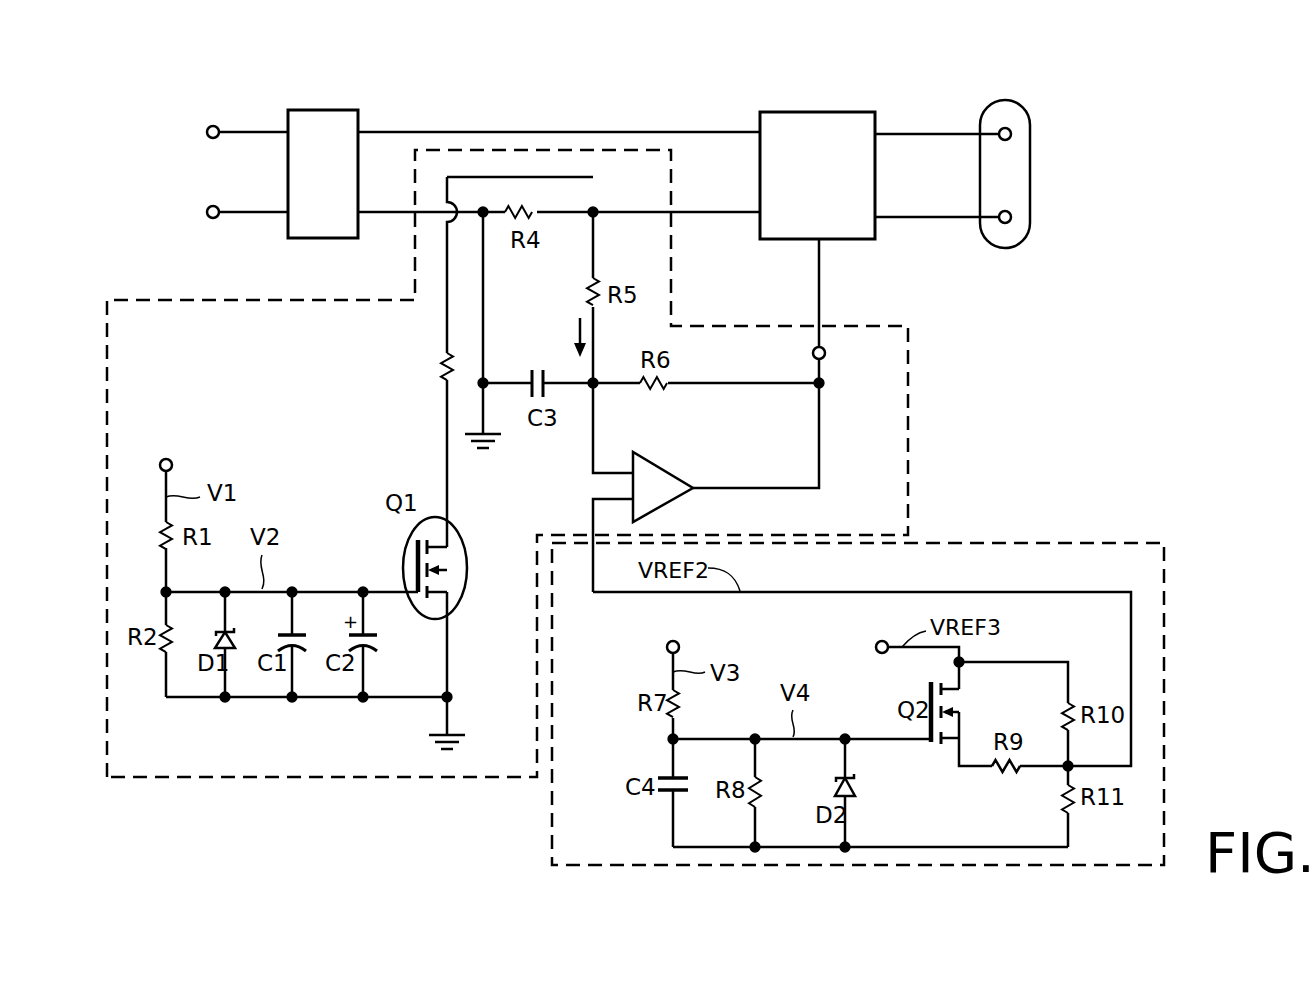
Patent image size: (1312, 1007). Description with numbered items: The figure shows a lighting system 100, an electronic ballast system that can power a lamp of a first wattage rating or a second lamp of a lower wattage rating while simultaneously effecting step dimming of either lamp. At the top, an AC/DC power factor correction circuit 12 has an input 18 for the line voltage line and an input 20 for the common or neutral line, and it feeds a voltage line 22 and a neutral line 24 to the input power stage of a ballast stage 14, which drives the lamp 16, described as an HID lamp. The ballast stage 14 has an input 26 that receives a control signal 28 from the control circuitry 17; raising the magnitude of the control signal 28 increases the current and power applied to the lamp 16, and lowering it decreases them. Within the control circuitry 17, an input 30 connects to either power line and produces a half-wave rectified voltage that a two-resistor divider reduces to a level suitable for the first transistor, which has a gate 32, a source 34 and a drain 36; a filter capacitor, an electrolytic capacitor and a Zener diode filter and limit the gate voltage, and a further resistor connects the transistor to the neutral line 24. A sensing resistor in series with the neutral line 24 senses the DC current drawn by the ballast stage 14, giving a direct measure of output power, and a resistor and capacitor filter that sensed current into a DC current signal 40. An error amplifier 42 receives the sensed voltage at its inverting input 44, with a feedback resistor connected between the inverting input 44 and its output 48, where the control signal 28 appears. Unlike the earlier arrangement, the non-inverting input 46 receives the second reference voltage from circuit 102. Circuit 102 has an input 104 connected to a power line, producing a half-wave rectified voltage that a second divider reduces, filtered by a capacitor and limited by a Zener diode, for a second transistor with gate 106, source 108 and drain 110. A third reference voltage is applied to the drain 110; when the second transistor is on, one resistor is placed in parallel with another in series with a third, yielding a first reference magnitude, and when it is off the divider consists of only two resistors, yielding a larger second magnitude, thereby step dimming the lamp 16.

The lighting system 100 is at (95, 62).
The AC/DC power factor correction circuit 12 is at (323, 110).
The ballast stage 14 is at (877, 175).
The lamp 16 is at (1005, 100).
The control circuitry 17 is at (910, 385).
The input 18 is at (206, 131).
The input 20 is at (206, 211).
The voltage line 22 is at (403, 132).
The neutral line 24 is at (383, 212).
The input 26 is at (812, 353).
The control signal 28 is at (821, 475).
The input 30 is at (172, 462).
The gate 32 is at (372, 588).
The source 34 is at (450, 657).
The drain 36 is at (445, 455).
The DC current signal 40 is at (575, 335).
The amplifier 42 is at (665, 466).
The inverting input 44 is at (613, 471).
The non-inverting input 46 is at (592, 497).
The output 48 is at (698, 486).
The circuit 102 is at (1062, 541).
The input 104 is at (667, 647).
The gate 106 is at (893, 742).
The source 108 is at (972, 770).
The drain 110 is at (961, 673).